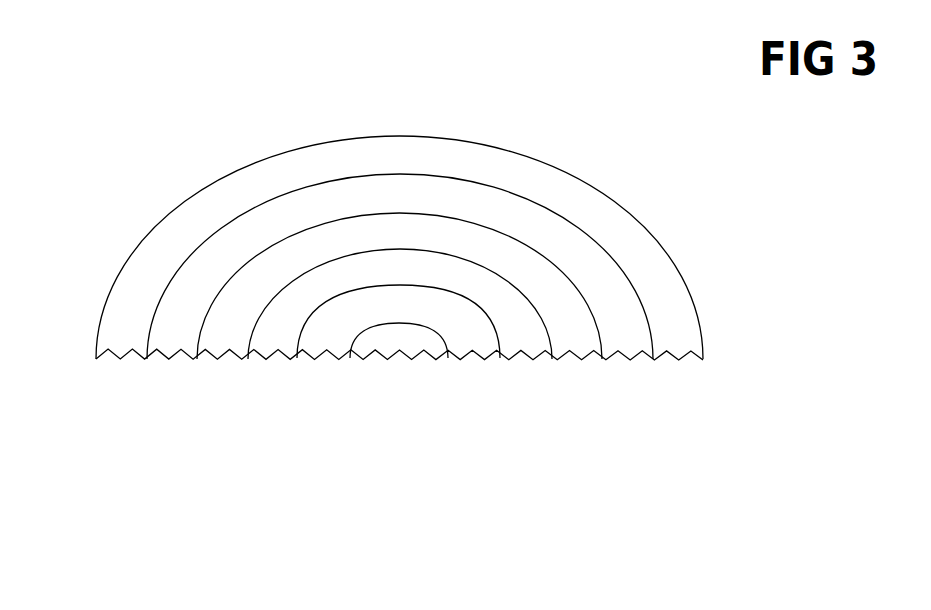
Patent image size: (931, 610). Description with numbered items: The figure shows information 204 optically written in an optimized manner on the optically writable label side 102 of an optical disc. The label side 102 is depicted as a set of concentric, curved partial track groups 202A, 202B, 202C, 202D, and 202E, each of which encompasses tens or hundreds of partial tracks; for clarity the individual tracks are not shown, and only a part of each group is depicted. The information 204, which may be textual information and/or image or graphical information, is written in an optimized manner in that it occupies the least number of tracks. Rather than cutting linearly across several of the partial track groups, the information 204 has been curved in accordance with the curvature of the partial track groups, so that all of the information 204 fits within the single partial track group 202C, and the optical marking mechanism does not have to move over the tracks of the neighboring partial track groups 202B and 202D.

The optically writable label side 102 is at (634, 439).
The partial track group 202A is at (323, 350).
The partial track group 202B is at (257, 350).
The partial track group 202C is at (218, 350).
The partial track group 202D is at (184, 346).
The partial track group 202E is at (106, 351).
The information 204 is at (407, 224).